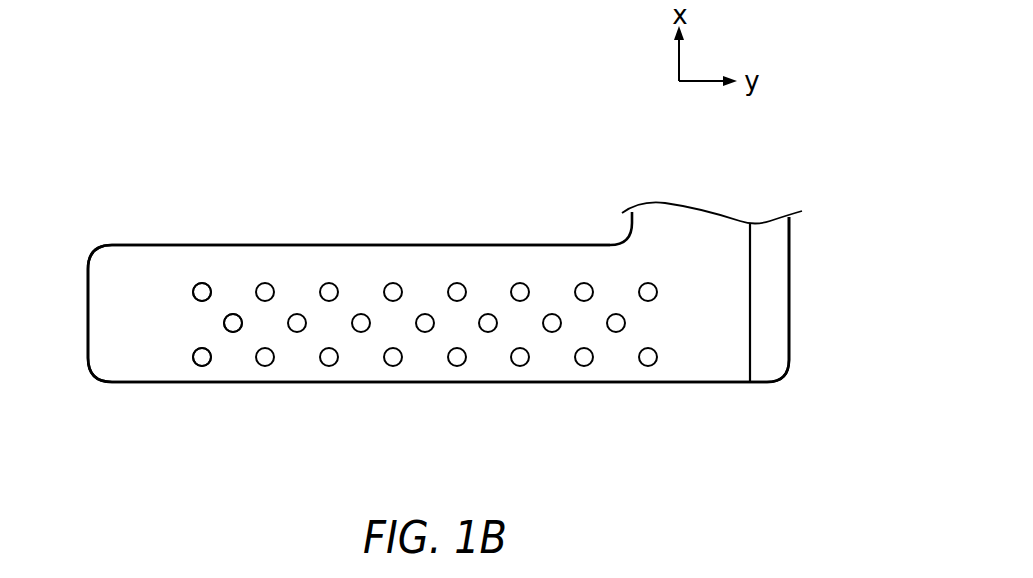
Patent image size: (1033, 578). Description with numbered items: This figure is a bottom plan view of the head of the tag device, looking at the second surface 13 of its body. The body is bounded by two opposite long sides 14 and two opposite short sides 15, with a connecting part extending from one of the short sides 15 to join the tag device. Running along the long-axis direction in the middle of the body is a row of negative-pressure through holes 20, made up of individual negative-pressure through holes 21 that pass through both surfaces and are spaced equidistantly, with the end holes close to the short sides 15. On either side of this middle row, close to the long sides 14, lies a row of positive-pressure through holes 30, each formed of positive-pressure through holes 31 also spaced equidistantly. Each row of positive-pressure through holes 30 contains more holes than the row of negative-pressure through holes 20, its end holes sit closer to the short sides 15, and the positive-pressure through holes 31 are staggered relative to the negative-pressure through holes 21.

The second surface 13 is at (299, 363).
The long sides 14 is at (434, 245).
The short sides 15 is at (88, 275).
The row of negative-pressure through holes 20 is at (200, 324).
The negative-pressure through hole 21 is at (233, 313).
The row of positive-pressure through holes 30 is at (168, 292).
The positive-pressure through hole 31 is at (200, 283).